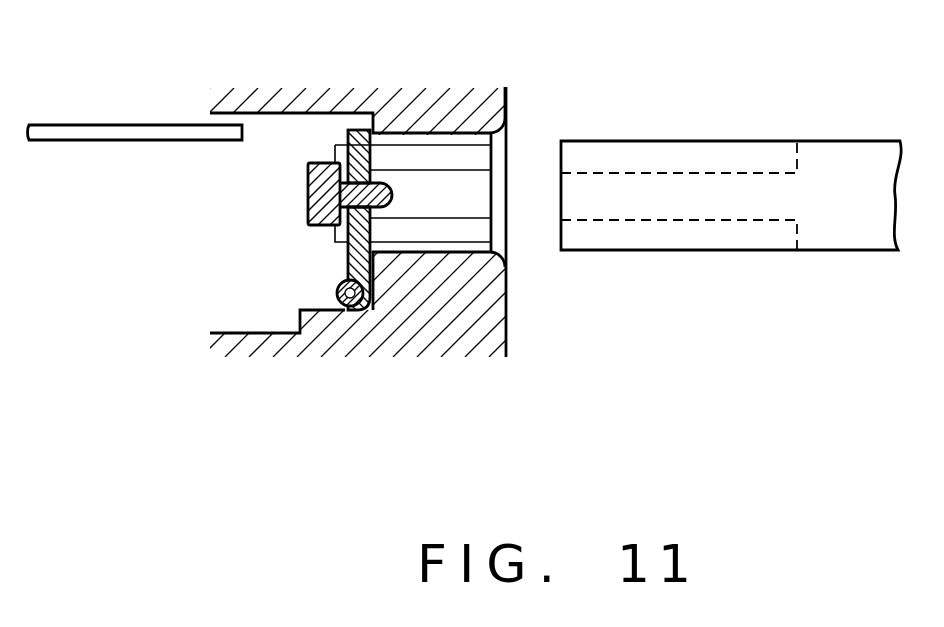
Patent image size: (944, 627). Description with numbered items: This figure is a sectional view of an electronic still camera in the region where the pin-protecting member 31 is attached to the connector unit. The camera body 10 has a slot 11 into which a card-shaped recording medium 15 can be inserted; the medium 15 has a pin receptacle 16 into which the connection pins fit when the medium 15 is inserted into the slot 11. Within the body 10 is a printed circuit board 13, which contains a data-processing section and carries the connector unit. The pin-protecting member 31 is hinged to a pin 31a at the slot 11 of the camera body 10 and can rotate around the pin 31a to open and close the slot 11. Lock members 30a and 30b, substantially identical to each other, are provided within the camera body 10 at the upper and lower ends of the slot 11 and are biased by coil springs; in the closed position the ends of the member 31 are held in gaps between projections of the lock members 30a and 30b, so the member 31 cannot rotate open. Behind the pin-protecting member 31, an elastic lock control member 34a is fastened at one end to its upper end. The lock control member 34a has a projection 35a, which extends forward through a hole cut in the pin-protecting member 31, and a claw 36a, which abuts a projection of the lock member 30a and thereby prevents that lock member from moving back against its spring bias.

The body 10 is at (507, 90).
The slot 11 is at (473, 240).
The printed circuit board 13 is at (113, 125).
The card-shaped recording medium 15 is at (850, 141).
The pin receptacle 16 is at (740, 180).
The lock member 30a is at (478, 156).
The lock member 30b is at (526, 156).
The pin-protecting member 31 is at (352, 250).
The pin 31a is at (345, 310).
The lock control member 34a is at (308, 193).
The projection 35a is at (404, 178).
The claw 36a is at (318, 162).